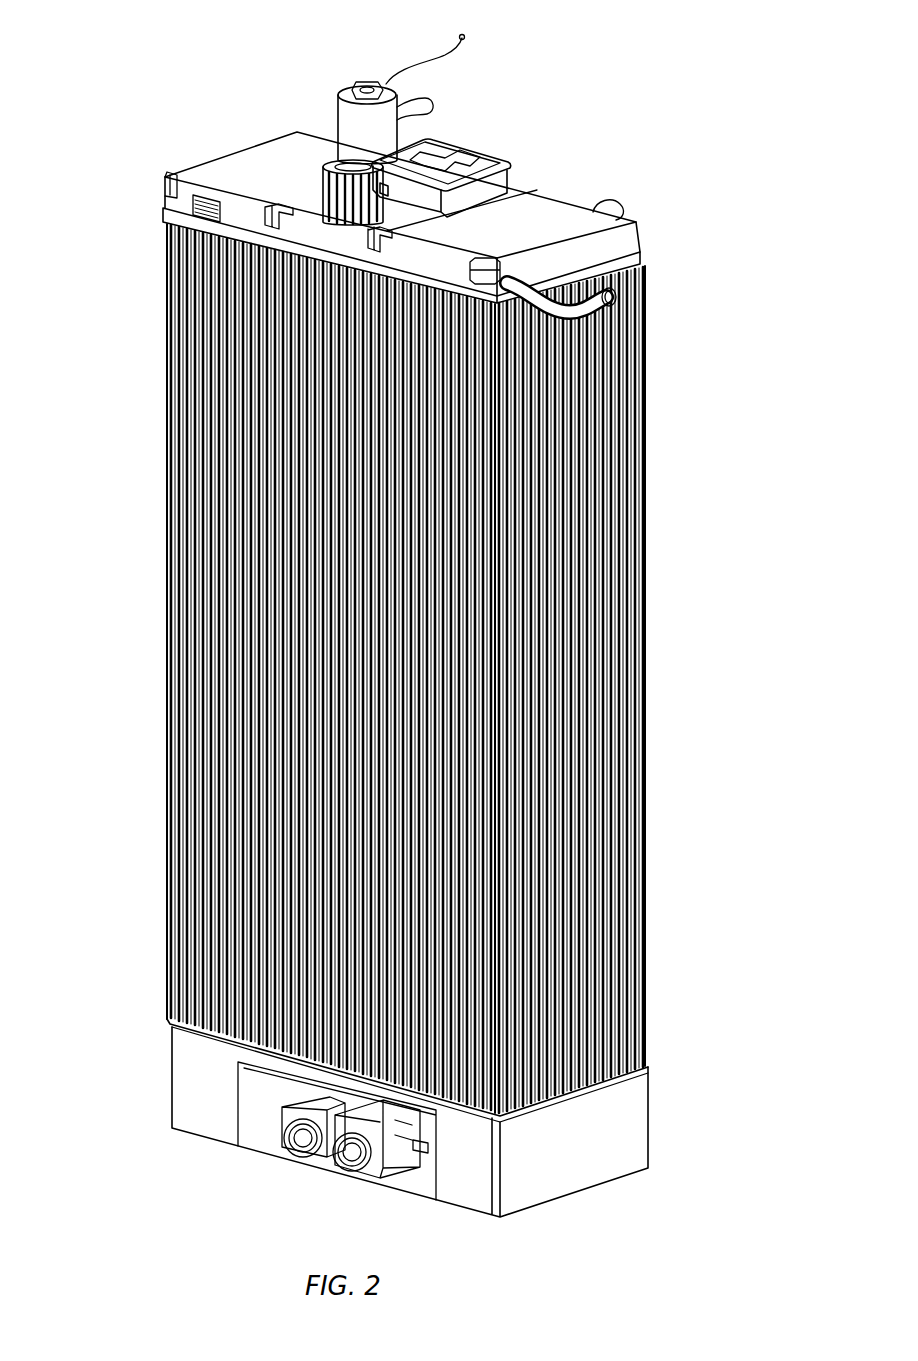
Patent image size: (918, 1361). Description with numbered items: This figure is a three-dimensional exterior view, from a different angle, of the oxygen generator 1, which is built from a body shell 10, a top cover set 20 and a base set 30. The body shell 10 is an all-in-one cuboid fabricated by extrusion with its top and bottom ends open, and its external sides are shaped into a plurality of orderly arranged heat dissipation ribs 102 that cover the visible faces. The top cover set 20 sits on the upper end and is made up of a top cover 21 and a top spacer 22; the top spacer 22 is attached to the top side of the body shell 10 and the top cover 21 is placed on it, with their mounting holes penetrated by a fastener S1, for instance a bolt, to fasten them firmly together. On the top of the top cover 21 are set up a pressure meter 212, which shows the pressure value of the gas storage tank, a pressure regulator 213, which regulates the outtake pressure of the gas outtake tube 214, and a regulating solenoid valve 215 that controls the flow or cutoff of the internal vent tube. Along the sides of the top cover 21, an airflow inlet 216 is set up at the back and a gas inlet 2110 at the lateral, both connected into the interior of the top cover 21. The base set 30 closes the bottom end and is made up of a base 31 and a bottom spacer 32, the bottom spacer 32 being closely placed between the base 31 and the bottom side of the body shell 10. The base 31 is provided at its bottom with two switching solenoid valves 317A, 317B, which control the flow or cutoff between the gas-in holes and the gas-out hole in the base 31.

The oxygen generator 1 is at (435, 636).
The body shell 10 is at (461, 668).
The heat dissipation ribs 102 is at (625, 636).
The top cover set 20 is at (433, 183).
The top cover 21 is at (620, 243).
The top spacer 22 is at (626, 261).
The pressure meter 212 is at (474, 152).
The pressure regulator 213 is at (333, 182).
The gas outtake tube 214 is at (380, 218).
The regulating solenoid valve 215 is at (357, 123).
The airflow inlet 216 is at (192, 212).
The gas inlet 2110 is at (513, 284).
The fastener S1 is at (163, 185).
The base set 30 is at (485, 1129).
The base 31 is at (640, 1095).
The bottom spacer 32 is at (650, 1066).
The switching solenoid valve 317A is at (283, 1112).
The switching solenoid valve 317B is at (372, 1170).